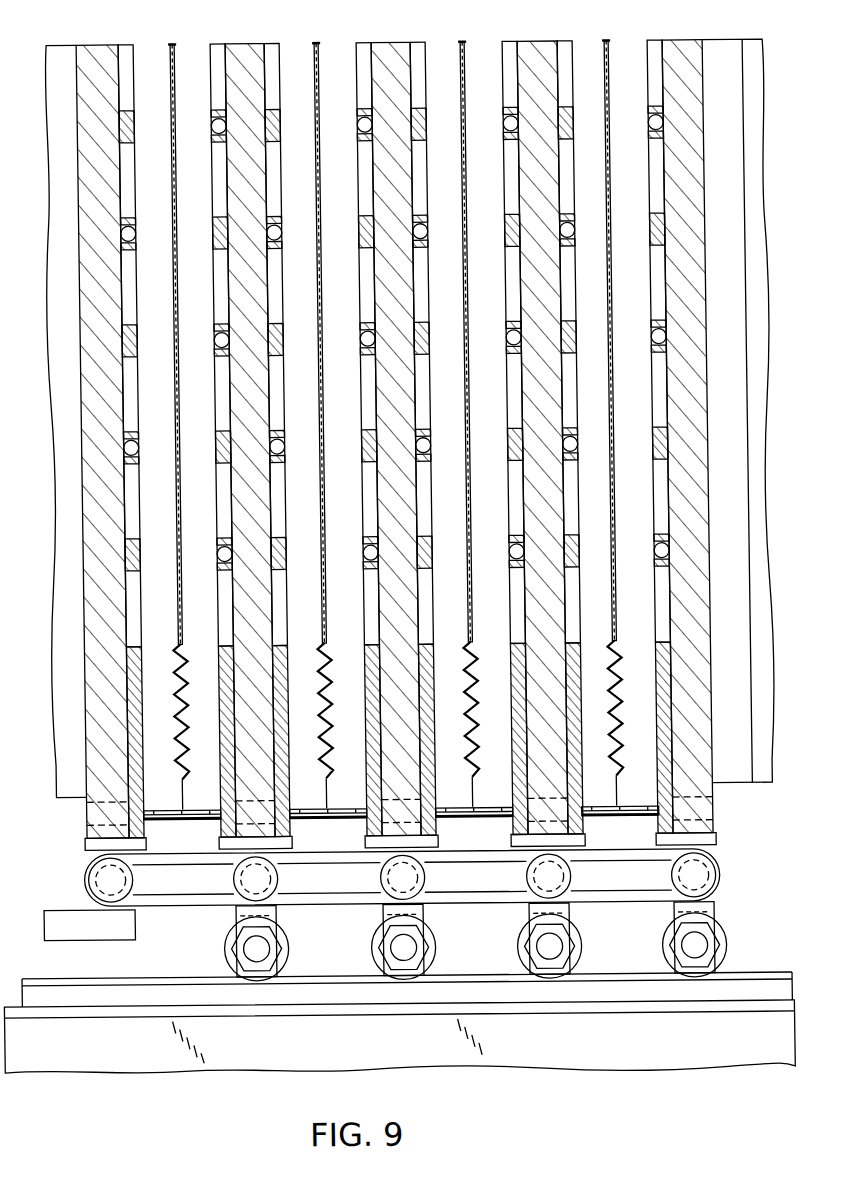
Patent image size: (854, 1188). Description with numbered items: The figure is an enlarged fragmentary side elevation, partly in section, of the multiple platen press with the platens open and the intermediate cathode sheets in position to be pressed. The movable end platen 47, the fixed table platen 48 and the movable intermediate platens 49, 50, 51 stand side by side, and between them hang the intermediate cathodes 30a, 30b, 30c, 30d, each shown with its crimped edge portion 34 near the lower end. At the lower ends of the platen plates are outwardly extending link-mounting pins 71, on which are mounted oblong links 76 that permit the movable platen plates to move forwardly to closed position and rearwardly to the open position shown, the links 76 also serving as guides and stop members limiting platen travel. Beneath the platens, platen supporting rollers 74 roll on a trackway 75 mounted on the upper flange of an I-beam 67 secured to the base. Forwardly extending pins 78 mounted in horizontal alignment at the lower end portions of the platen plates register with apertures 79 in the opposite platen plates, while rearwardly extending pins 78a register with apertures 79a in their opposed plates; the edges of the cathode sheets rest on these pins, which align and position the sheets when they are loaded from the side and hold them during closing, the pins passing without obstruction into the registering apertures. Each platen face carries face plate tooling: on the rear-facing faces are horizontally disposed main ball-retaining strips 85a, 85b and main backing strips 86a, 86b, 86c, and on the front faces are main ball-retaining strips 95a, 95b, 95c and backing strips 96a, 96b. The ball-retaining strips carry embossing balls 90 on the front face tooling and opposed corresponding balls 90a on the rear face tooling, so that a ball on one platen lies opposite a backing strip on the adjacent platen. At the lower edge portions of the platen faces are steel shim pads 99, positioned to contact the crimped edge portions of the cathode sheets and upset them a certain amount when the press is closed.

The intermediate cathode 30a is at (607, 52).
The intermediate cathode 30b is at (463, 52).
The intermediate cathode 30c is at (317, 52).
The intermediate cathode 30d is at (172, 52).
The crimped edge portion 34 is at (180, 688).
The movable end platen 47 is at (681, 60).
The fixed table platen 48 is at (110, 54).
The movable intermediate platen 49 is at (538, 60).
The movable intermediate platen 50 is at (384, 60).
The movable intermediate platen 51 is at (238, 60).
The I-beam 67 is at (556, 1068).
The link-mounting pin 71 is at (98, 892).
The platen supporting roller 74 is at (251, 980).
The trackway 75 is at (742, 1008).
The oblong link 76 is at (174, 908).
The forwardly extending pin 78 is at (206, 822).
The rearwardly extending pin 78a is at (178, 822).
The aperture 79 is at (290, 812).
The aperture 79a is at (90, 815).
The main ball-retaining strip 85a is at (134, 460).
The main ball-retaining strip 85b is at (134, 246).
The main backing strip 86a is at (134, 566).
The main backing strip 86b is at (134, 352).
The main backing strip 86c is at (134, 134).
The embossing ball 90 is at (212, 121).
The embossing ball 90a is at (132, 228).
The main ball-retaining strip 95a is at (212, 569).
The main ball-retaining strip 95b is at (212, 355).
The main ball-retaining strip 95c is at (212, 141).
The backing strip 96a is at (211, 459).
The backing strip 96b is at (211, 246).
The steel shim pad 99 is at (133, 737).